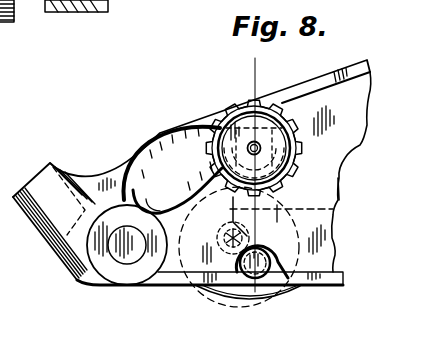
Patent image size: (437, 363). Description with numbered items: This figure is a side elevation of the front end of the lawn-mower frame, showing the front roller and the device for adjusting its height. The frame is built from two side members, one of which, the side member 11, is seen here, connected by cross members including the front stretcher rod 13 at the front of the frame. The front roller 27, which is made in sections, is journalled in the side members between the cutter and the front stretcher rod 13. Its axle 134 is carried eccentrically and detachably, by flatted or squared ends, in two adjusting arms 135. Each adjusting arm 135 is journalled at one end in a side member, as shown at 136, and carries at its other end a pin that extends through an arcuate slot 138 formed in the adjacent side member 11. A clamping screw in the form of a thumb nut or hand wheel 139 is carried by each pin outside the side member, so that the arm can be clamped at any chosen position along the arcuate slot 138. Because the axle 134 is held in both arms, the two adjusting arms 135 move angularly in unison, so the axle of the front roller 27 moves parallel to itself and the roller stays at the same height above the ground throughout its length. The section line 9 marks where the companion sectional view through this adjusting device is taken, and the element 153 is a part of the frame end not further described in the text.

The section line 9 is at (236, 72).
The side member 11 is at (345, 125).
The front stretcher rod 13 is at (122, 252).
The front roller 27 is at (229, 298).
The axle 134 is at (27, 0).
The adjusting arm 135 is at (333, 209).
The journal 136 is at (64, 10).
The arcuate slot 138 is at (167, 195).
The hand wheel 139 is at (330, 168).
The tab 153 is at (50, 203).